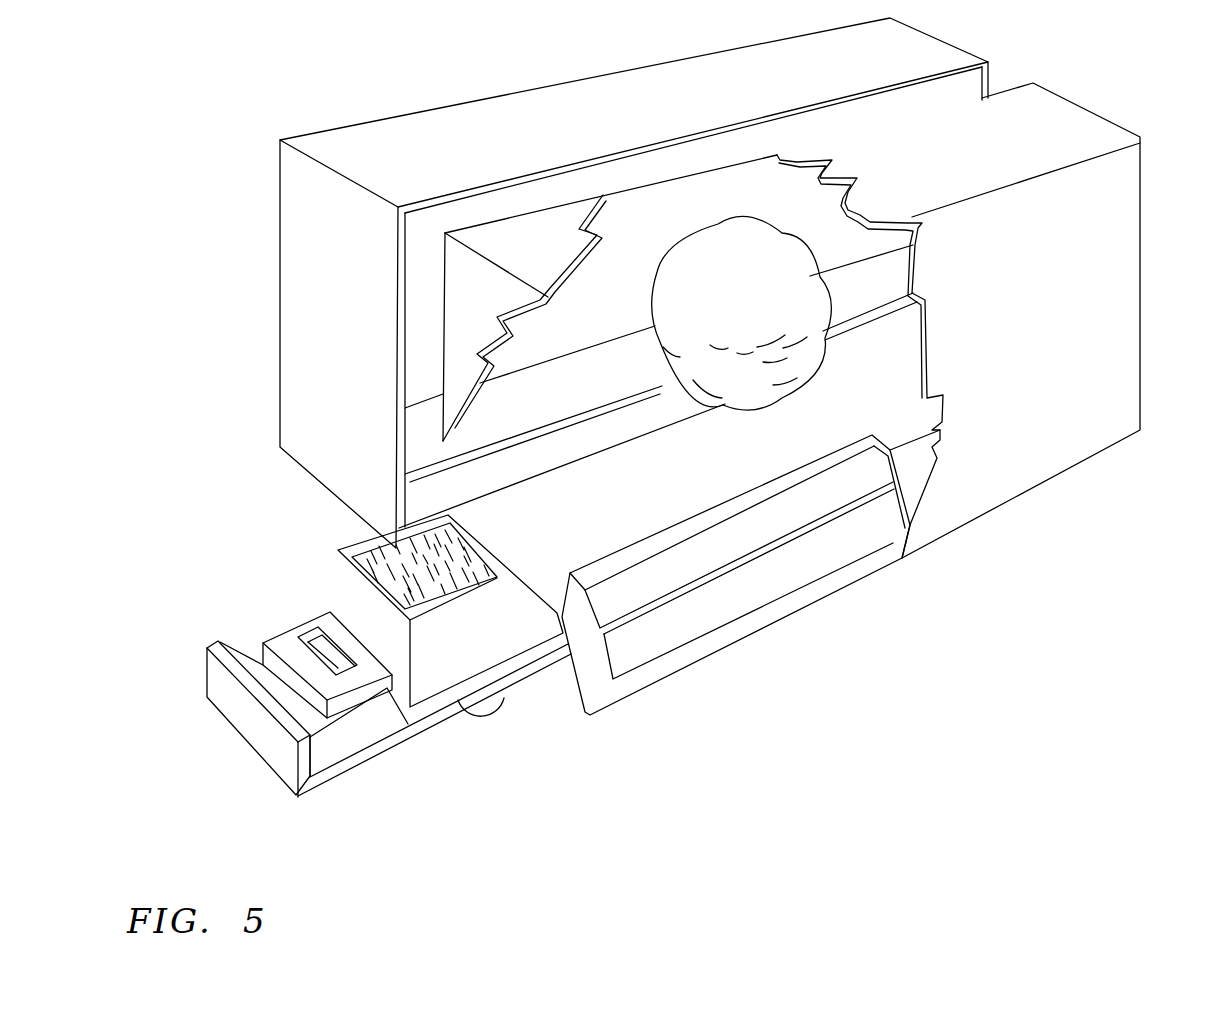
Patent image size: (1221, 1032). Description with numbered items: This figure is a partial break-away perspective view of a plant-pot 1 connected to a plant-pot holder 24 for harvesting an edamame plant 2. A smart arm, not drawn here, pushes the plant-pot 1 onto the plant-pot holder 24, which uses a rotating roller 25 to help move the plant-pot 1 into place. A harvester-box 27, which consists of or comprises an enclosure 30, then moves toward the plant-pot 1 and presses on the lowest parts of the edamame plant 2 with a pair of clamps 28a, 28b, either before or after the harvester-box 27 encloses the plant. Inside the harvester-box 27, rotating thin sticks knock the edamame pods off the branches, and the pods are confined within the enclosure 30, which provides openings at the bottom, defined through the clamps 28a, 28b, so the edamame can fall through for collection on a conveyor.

The plant-pot 1 is at (500, 647).
The plant 2 is at (743, 325).
The plant-pot holder 24 is at (250, 740).
The rotating roller 25 is at (472, 718).
The harvester-box 27 is at (1118, 333).
The clamp 28a is at (645, 503).
The clamp 28b is at (637, 407).
The enclosure 30 is at (1141, 263).